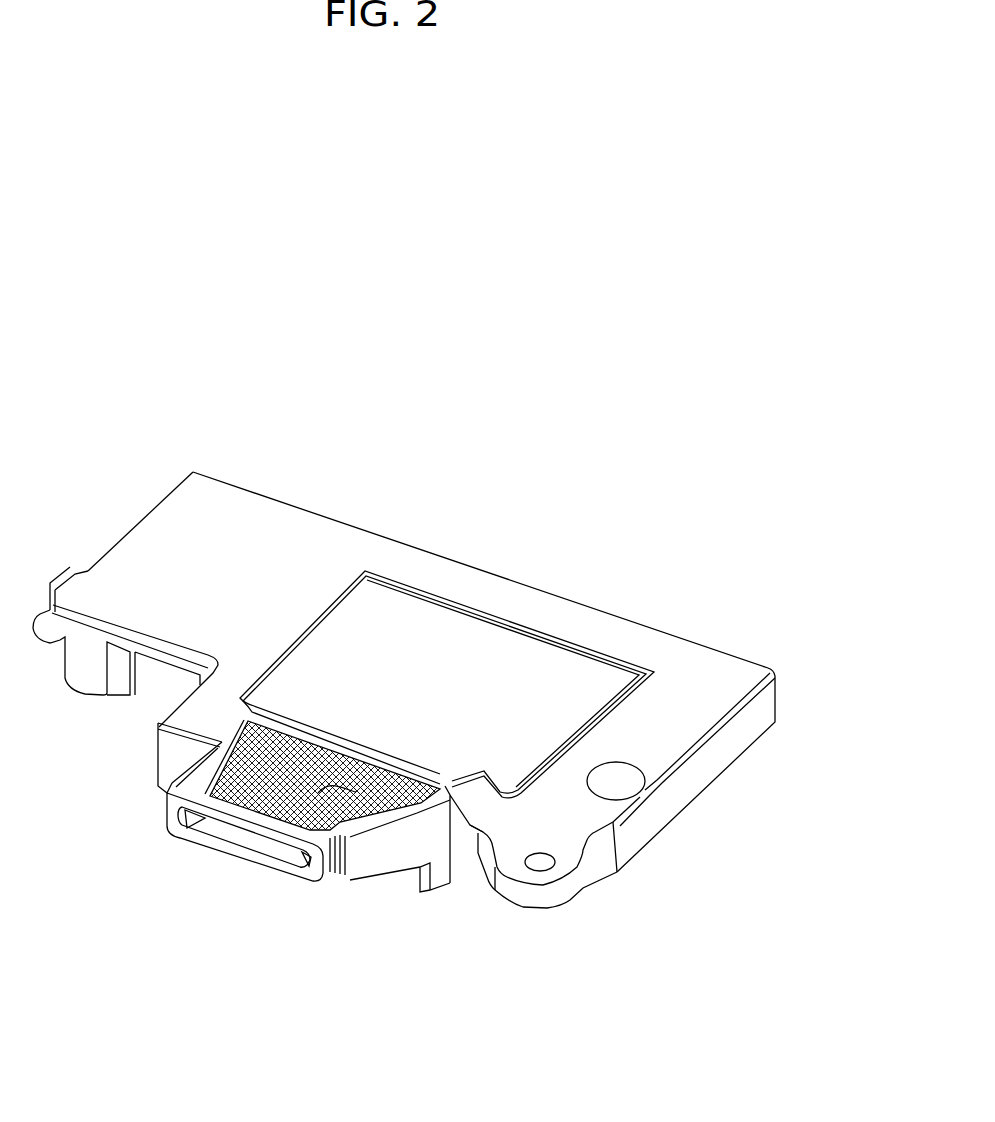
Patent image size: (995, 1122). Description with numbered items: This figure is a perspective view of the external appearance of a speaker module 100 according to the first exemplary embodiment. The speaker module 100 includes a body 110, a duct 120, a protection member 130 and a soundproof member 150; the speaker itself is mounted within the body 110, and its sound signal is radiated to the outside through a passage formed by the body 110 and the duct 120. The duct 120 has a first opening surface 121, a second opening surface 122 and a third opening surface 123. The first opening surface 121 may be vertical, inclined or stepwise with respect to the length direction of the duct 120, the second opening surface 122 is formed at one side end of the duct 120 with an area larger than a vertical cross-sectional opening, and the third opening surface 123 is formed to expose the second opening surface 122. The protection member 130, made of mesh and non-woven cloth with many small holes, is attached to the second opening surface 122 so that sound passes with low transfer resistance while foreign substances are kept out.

The speaker module 100 is at (610, 529).
The body 110 is at (258, 497).
The duct 120 is at (392, 857).
The first opening surface 121 is at (217, 828).
The second opening surface 122 is at (307, 848).
The third opening surface 123 is at (182, 808).
The protection member 130 is at (262, 752).
The soundproof member 150 is at (350, 793).